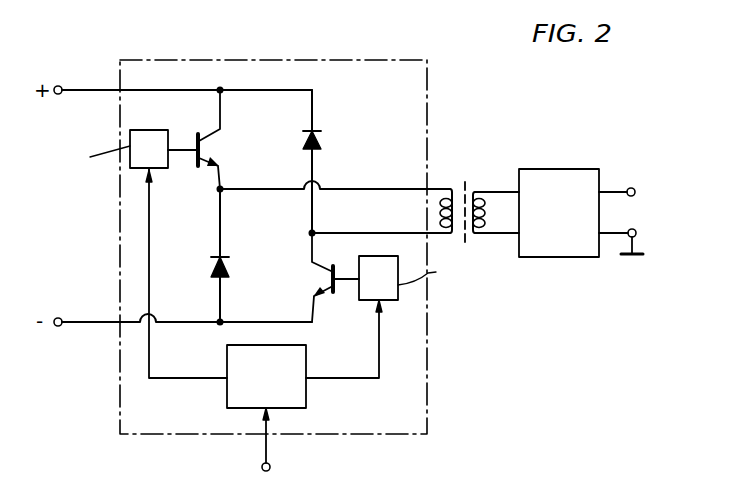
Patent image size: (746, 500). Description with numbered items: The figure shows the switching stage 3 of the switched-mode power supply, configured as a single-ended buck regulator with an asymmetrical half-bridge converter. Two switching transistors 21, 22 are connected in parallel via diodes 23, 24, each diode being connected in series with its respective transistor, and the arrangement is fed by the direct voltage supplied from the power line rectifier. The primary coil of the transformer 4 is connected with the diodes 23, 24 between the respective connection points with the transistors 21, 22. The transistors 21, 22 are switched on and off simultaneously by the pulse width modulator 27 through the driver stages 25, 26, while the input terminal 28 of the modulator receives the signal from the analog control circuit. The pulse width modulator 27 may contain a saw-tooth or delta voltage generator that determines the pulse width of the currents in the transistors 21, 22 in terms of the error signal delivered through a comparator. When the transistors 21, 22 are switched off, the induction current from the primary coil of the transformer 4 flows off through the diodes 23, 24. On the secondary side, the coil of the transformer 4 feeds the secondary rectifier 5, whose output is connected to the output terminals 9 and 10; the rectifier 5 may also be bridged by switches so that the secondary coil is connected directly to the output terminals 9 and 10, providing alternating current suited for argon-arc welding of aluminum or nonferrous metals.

The switching stage 3 is at (327, 60).
The transformer 4 is at (468, 182).
The secondary rectifier 5 is at (551, 187).
The output terminal 9 is at (636, 189).
The output terminal 10 is at (638, 236).
The switching transistor 21 is at (200, 137).
The switching transistor 22 is at (334, 292).
The diode 23 is at (223, 258).
The diode 24 is at (316, 134).
The driver stage 25 is at (148, 150).
The driver stage 26 is at (388, 290).
The pulse width modulator 27 is at (243, 364).
The input terminal 28 is at (271, 470).